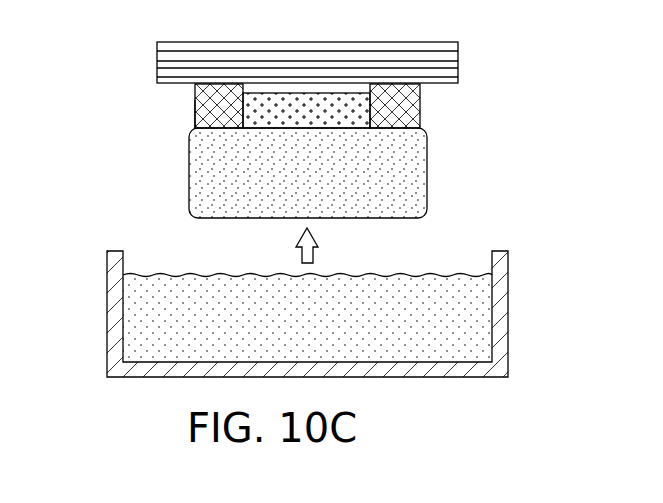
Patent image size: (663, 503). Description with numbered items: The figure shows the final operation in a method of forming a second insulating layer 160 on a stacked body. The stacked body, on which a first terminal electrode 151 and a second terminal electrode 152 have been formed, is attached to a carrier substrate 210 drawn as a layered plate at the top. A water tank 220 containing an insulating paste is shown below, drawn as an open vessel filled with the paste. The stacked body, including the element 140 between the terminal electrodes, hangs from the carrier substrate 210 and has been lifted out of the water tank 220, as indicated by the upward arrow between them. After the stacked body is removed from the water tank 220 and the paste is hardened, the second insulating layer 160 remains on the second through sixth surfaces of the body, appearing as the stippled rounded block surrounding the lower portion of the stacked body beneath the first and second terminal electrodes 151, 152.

The carrier substrate 210 is at (157, 74).
The spacer 140 is at (200, 109).
The first terminal electrode 151 is at (196, 120).
The second terminal electrode 152 is at (418, 120).
The second insulating layer 160 is at (403, 170).
The water tank 220 is at (108, 335).